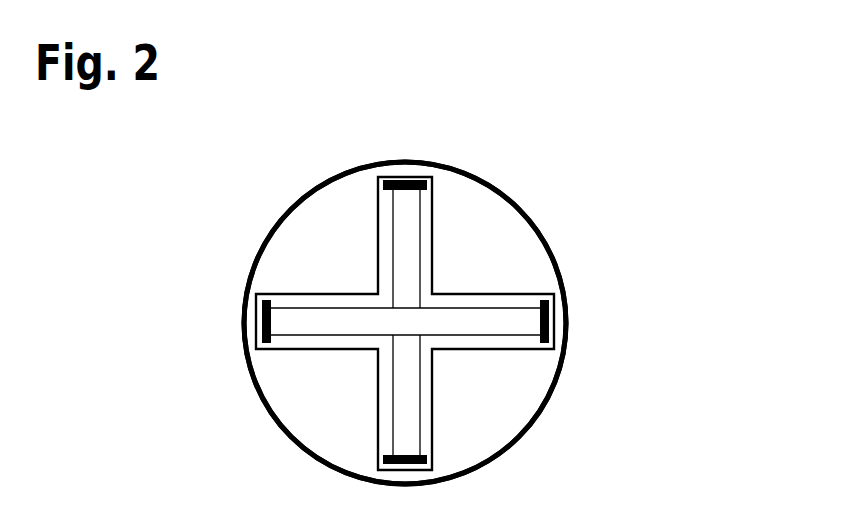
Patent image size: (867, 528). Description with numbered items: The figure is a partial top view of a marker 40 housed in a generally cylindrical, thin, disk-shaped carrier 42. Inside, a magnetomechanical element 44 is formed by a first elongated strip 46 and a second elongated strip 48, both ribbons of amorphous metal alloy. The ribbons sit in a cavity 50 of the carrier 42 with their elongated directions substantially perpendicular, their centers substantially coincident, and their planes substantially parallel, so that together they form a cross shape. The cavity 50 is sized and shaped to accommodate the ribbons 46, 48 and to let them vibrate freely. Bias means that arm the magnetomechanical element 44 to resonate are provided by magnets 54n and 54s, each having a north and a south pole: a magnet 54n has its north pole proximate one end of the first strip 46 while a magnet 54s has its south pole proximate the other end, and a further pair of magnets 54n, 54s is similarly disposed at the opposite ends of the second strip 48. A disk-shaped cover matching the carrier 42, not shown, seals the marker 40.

The marker 40 is at (565, 160).
The carrier 42 is at (543, 235).
The magnetomechanical element 44 is at (395, 322).
The first elongated strip 46 is at (463, 320).
The second elongated strip 48 is at (408, 387).
The cavity 50 is at (498, 303).
The magnet 54n is at (395, 192).
The magnet 54s is at (266, 344).